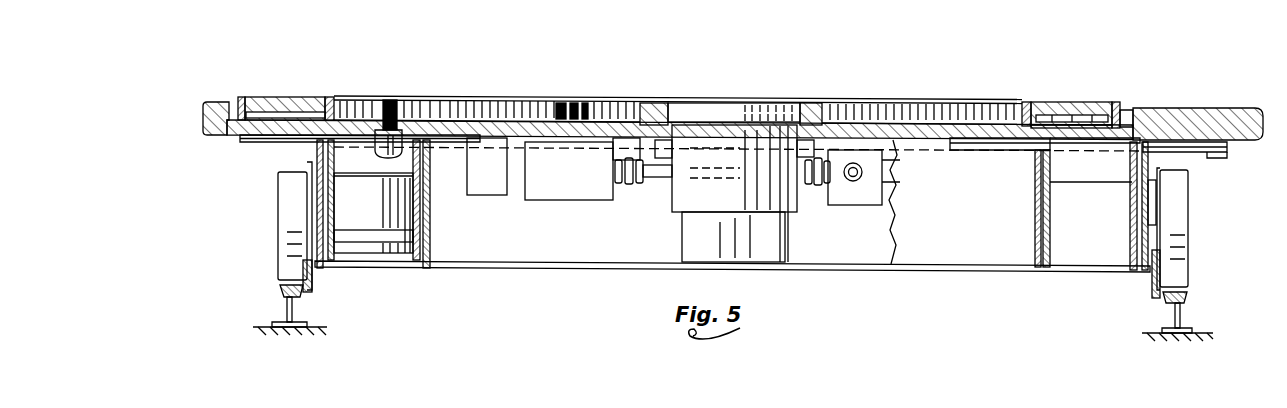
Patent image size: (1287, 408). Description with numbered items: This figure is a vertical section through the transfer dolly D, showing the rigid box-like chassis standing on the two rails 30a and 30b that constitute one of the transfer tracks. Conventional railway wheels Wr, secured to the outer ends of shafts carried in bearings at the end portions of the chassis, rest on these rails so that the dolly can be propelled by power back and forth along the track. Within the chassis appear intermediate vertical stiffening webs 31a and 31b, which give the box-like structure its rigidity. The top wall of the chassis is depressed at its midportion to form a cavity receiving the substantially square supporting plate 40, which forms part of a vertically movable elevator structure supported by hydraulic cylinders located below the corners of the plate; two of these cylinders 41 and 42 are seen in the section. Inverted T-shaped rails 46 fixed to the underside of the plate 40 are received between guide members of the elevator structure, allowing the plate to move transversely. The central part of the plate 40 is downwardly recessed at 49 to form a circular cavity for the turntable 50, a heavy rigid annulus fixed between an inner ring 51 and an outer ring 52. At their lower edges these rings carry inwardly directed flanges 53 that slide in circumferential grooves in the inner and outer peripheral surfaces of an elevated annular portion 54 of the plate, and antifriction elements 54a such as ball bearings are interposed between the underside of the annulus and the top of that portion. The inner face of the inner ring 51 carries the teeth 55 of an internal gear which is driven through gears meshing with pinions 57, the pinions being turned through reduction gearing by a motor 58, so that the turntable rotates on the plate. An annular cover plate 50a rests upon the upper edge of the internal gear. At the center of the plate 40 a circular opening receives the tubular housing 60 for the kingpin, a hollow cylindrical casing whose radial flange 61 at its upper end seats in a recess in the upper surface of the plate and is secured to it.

The rail 30a is at (287, 310).
The rail 30b is at (1177, 317).
The intermediate vertical stiffening web 31a is at (1037, 186).
The intermediate vertical stiffening web 31b is at (1163, 168).
The supporting plate 40 is at (1195, 108).
The hydraulic cylinder 41 is at (1067, 200).
The hydraulic cylinder 42 is at (383, 207).
The rail 46 is at (257, 147).
The downward recess 49 is at (1132, 110).
The turntable 50 is at (330, 100).
The annular cover plate 50a is at (627, 100).
The inner ring 51 is at (1047, 82).
The outer ring 52 is at (1120, 110).
The inwardly directed flange 53 is at (1095, 108).
The elevated annular portion 54 is at (1090, 130).
The antifriction elements 54a is at (1050, 103).
The teeth of internal gear 55 is at (925, 101).
The pinion 57 is at (575, 103).
The motor 58 is at (1058, 128).
The tubular housing 60 is at (675, 200).
The radial flange 61 is at (740, 104).
The transfer dolly D is at (970, 97).
The railway wheels Wr is at (1215, 236).